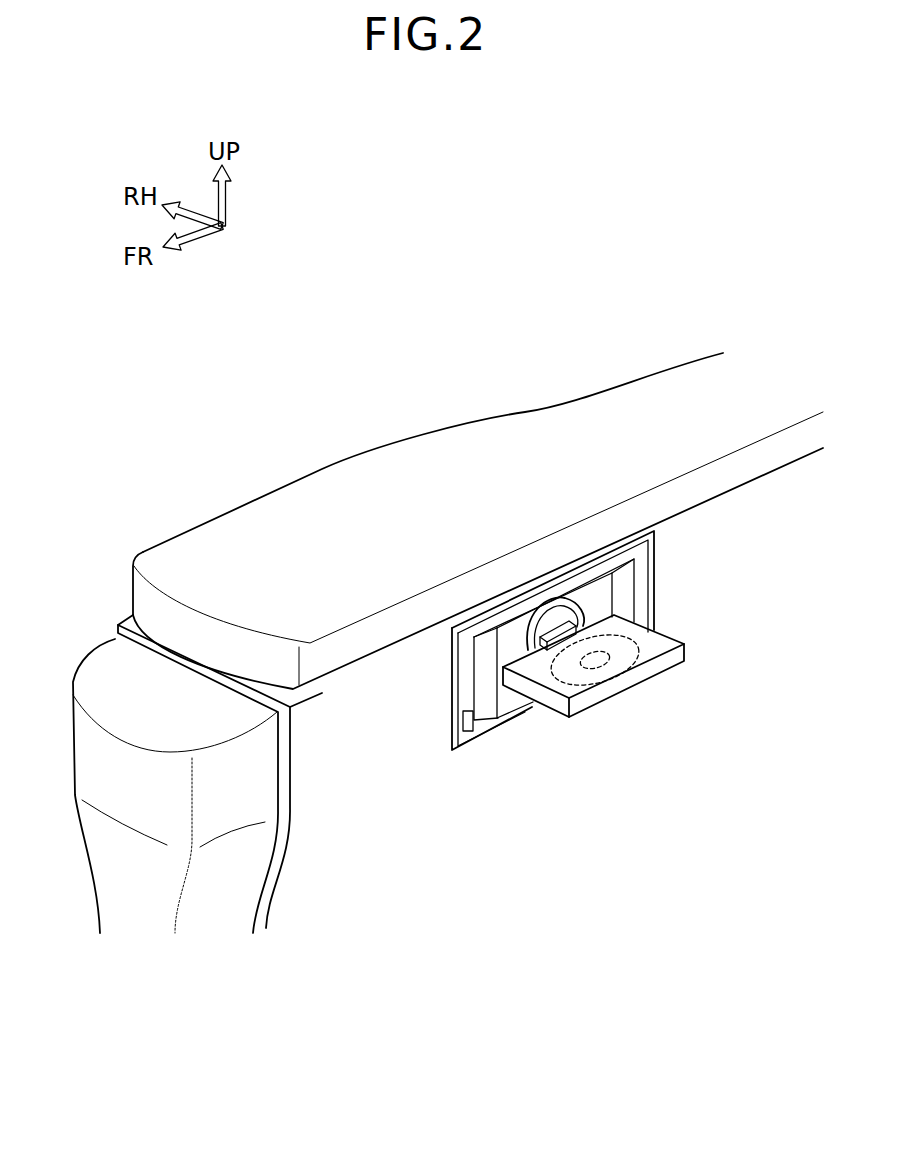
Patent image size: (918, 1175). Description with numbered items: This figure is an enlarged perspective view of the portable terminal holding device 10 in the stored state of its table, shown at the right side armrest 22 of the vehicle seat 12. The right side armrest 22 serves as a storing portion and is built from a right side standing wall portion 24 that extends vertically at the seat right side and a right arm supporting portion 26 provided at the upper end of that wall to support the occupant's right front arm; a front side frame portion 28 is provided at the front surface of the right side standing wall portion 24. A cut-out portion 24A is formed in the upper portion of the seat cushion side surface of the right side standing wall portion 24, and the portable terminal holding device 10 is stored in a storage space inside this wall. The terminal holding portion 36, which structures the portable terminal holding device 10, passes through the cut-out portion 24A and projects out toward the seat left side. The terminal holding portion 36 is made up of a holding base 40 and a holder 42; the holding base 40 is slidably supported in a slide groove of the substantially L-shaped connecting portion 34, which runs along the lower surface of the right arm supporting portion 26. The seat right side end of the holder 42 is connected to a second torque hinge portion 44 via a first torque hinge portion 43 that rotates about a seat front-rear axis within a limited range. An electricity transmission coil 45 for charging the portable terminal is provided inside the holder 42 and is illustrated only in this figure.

The portable terminal holding device 10 is at (693, 578).
The vehicle seat 12 is at (530, 319).
The right side armrest 22 is at (250, 464).
The right side standing wall portion 24 is at (361, 868).
The cut-out portion 24A is at (470, 735).
The right arm supporting portion 26 is at (420, 467).
The front side frame portion 28 is at (85, 665).
The connecting portion 34 is at (659, 550).
The terminal holding portion 36 is at (575, 742).
The holding base 40 is at (628, 601).
The holder 42 is at (654, 688).
The first torque hinge portion 43 is at (550, 625).
The second torque hinge portion 44 is at (577, 620).
The electricity transmission coil 45 is at (684, 660).